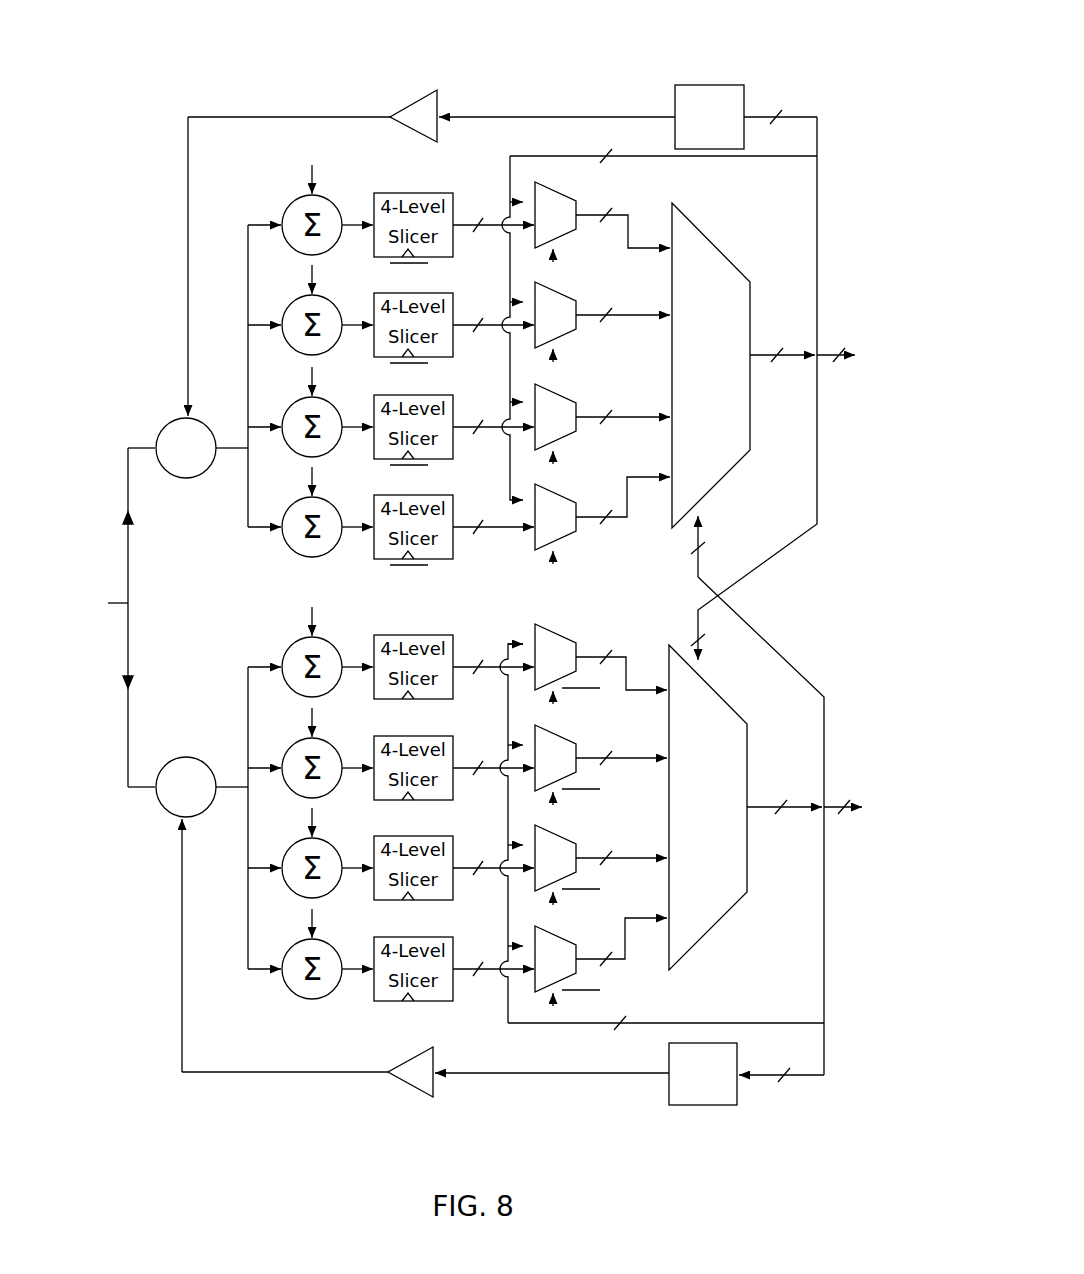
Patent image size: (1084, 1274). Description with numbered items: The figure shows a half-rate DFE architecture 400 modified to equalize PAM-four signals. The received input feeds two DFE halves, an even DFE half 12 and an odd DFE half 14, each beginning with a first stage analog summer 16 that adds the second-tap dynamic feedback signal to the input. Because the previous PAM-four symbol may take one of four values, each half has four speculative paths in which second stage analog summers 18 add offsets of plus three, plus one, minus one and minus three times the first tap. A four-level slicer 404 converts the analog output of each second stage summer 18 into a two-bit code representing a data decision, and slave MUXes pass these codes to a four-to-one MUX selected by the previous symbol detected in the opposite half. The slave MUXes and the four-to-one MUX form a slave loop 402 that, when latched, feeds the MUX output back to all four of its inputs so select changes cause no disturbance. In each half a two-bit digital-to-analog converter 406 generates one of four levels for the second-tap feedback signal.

The DFE architecture 400 is at (512, 20).
The even DFE half 12 is at (128, 433).
The odd DFE half 14 is at (165, 865).
The first stage analog summer 16 is at (193, 478).
The second stage analog summer 18 is at (343, 243).
The slave loop 402 is at (740, 156).
The 4-level slicer 404 is at (453, 258).
The 2-bit digital-to-analog converter 406 is at (744, 95).